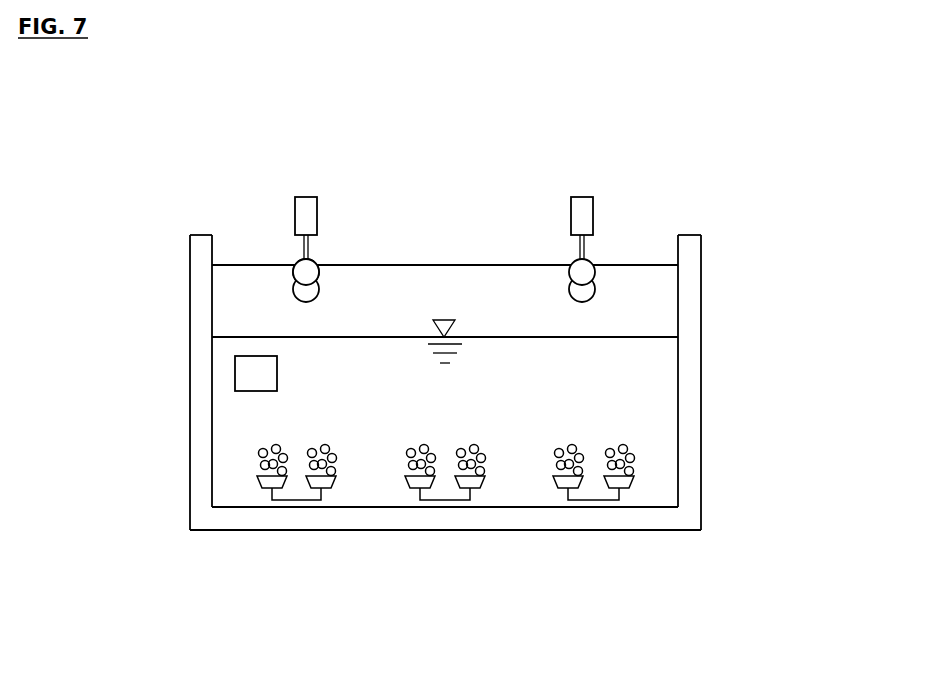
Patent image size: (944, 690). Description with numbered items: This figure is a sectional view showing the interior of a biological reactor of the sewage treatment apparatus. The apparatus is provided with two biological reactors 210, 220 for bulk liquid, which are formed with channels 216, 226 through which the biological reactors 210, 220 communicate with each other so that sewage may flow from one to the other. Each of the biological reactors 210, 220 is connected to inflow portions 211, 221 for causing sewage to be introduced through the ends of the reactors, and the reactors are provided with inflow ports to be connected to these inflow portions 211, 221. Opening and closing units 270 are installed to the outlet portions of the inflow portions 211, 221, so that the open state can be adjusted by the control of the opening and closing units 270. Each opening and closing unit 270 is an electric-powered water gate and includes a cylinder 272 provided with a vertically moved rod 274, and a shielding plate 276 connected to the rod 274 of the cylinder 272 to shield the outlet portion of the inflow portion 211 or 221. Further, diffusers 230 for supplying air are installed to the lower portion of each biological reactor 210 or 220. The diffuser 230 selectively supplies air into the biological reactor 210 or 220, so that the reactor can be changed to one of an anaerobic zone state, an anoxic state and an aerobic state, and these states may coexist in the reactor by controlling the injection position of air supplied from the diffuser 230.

The opening and closing unit 270 is at (222, 196).
The cylinder 272 is at (317, 212).
The rod 274 is at (309, 244).
The shielding plate 276 is at (299, 262).
The inflow portion 211 is at (182, 280).
The inflow portion 221 is at (294, 288).
The channel 216 is at (159, 373).
The channel 226 is at (235, 368).
The biological reactor 210 is at (527, 382).
The biological reactor 220 is at (701, 403).
The diffuser 230 is at (258, 480).